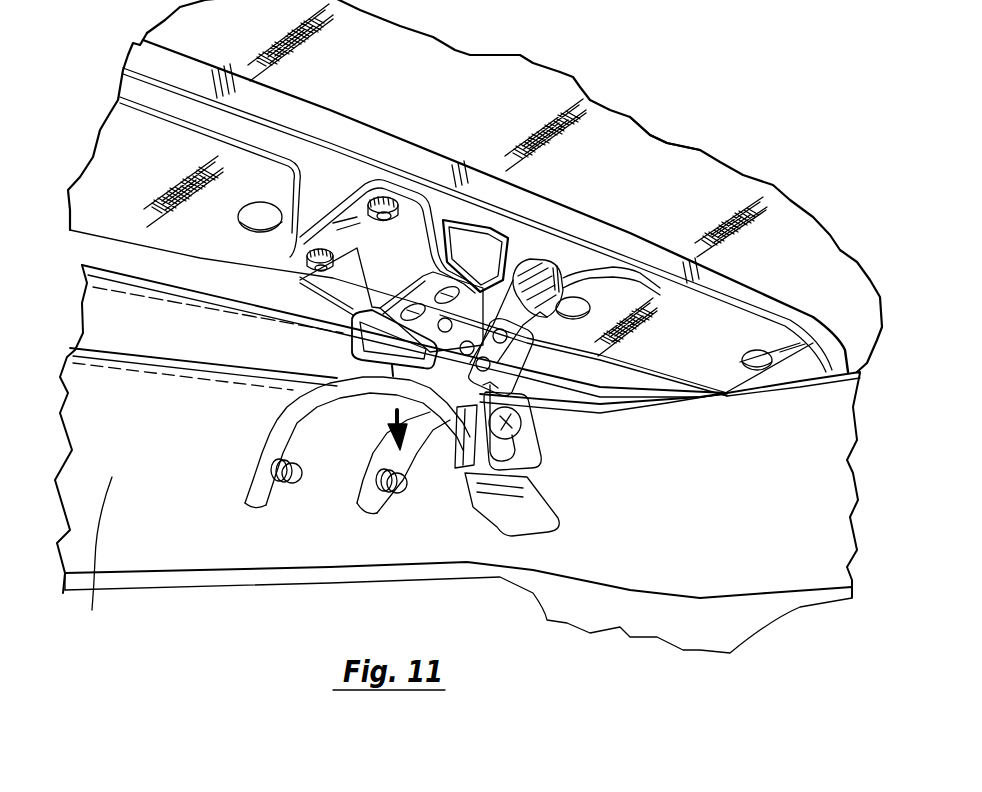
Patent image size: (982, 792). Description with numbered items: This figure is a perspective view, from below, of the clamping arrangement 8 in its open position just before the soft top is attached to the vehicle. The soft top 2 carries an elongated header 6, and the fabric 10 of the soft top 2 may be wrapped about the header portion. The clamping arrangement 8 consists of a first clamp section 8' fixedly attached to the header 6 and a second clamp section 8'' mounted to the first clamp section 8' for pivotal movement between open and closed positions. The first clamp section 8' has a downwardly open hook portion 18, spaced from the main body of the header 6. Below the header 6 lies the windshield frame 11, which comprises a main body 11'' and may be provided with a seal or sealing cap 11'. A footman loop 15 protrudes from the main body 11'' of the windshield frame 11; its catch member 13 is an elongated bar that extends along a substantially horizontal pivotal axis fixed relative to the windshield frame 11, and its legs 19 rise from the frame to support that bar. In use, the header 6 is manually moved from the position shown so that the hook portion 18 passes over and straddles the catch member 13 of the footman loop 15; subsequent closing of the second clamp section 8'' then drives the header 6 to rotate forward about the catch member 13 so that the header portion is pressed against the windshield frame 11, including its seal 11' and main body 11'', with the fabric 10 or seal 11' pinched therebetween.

The soft top 2 is at (746, 170).
The fabric 10 is at (661, 137).
The header 6 is at (412, 145).
The seal 11' is at (171, 177).
The windshield frame 11 is at (446, 459).
The main body of the windshield frame 11'' is at (96, 560).
The clamping arrangement 8 is at (565, 374).
The first clamp section 8' is at (404, 267).
The second clamp section 8'' is at (527, 459).
The hook portion 18 is at (368, 340).
The footman loop 15 is at (228, 414).
The catch member 13 is at (368, 416).
The legs 19 is at (317, 420).